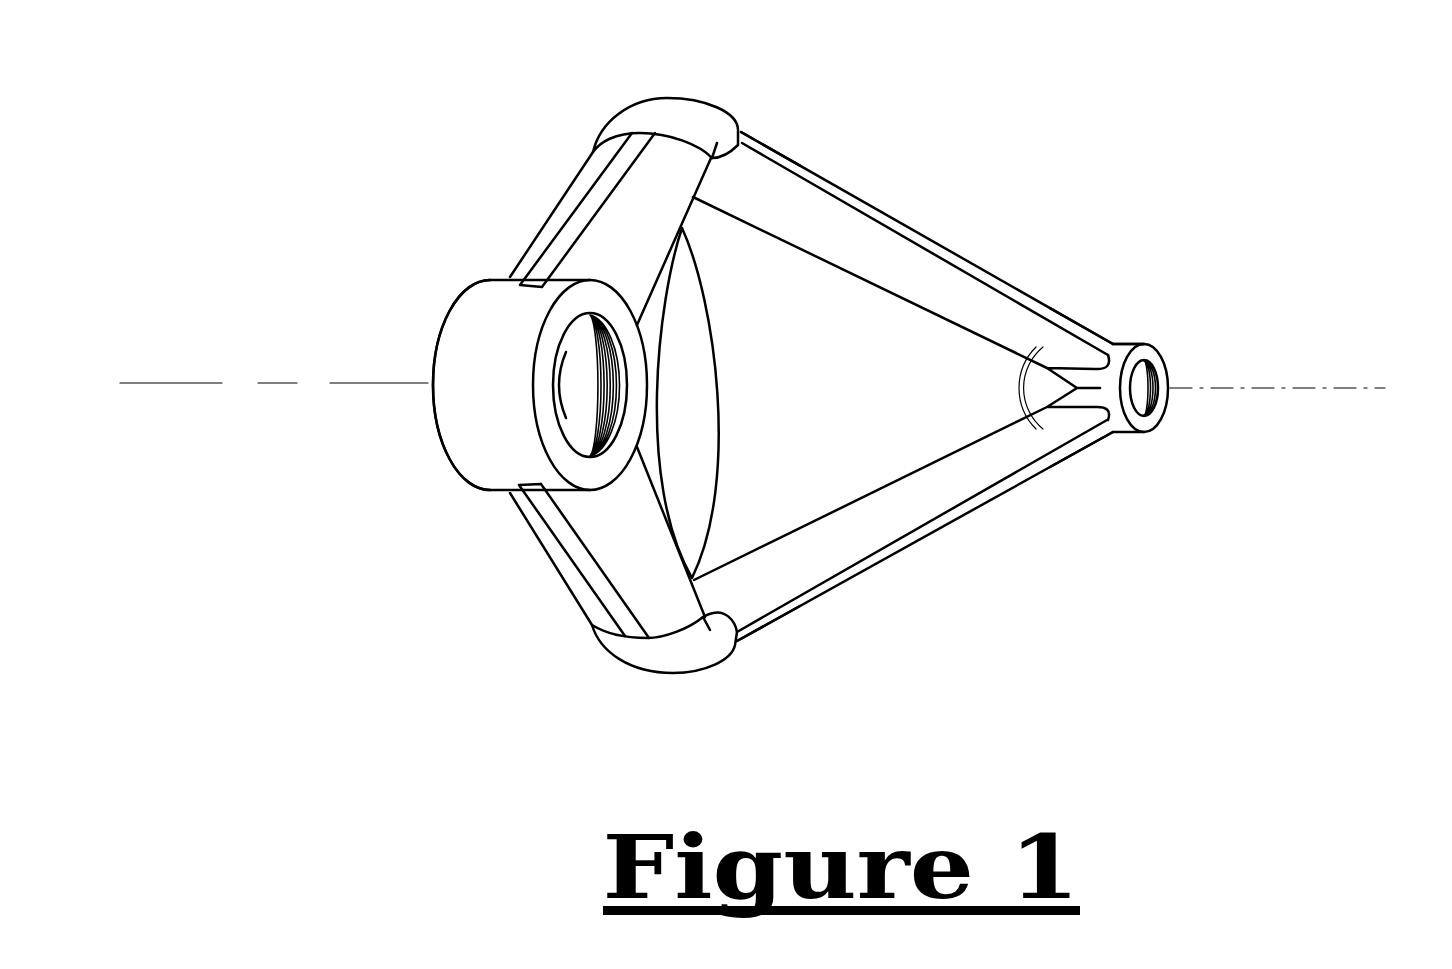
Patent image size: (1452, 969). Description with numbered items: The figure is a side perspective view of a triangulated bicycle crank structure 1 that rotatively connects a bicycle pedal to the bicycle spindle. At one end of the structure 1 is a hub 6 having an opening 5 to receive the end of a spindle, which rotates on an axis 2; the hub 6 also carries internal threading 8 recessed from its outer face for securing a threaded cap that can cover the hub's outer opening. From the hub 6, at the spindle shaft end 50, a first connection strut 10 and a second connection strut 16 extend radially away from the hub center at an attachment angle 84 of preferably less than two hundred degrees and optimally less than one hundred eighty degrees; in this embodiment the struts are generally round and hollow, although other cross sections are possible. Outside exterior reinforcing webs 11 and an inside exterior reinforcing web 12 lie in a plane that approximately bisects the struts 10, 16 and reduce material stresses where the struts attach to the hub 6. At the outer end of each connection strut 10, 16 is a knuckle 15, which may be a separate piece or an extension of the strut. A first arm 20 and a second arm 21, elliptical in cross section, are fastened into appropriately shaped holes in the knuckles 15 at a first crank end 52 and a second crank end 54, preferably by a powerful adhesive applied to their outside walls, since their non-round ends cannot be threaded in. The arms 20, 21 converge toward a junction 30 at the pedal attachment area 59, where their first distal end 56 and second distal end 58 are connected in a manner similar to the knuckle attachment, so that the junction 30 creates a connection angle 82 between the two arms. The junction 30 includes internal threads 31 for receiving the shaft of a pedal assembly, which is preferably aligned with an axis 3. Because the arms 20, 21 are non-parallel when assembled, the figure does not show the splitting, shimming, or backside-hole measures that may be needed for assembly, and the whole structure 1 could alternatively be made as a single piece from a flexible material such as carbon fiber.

The structure 1 is at (972, 142).
The axis 2 is at (180, 383).
The axis 3 is at (1385, 388).
The opening 5 is at (567, 372).
The hub 6 is at (446, 462).
The internal threading 8 is at (607, 410).
The first connection strut 10 is at (653, 207).
The outside exterior reinforcing webs 11 is at (583, 198).
The inside exterior reinforcing web 12 is at (665, 350).
The knuckles 15 is at (697, 100).
The second connection strut 16 is at (683, 547).
The first arm 20 is at (942, 241).
The second arm 21 is at (915, 540).
The junction 30 is at (1175, 346).
The internal threads 31 is at (1168, 408).
The spindle shaft end 50 is at (425, 517).
The first crank end 52 is at (792, 153).
The second crank end 54 is at (790, 628).
The first distal end 56 is at (1064, 298).
The second distal end 58 is at (1060, 480).
The pedal attachment area 59 is at (1160, 330).
The connection angle 82 is at (1008, 397).
The attachment angle 84 is at (730, 390).